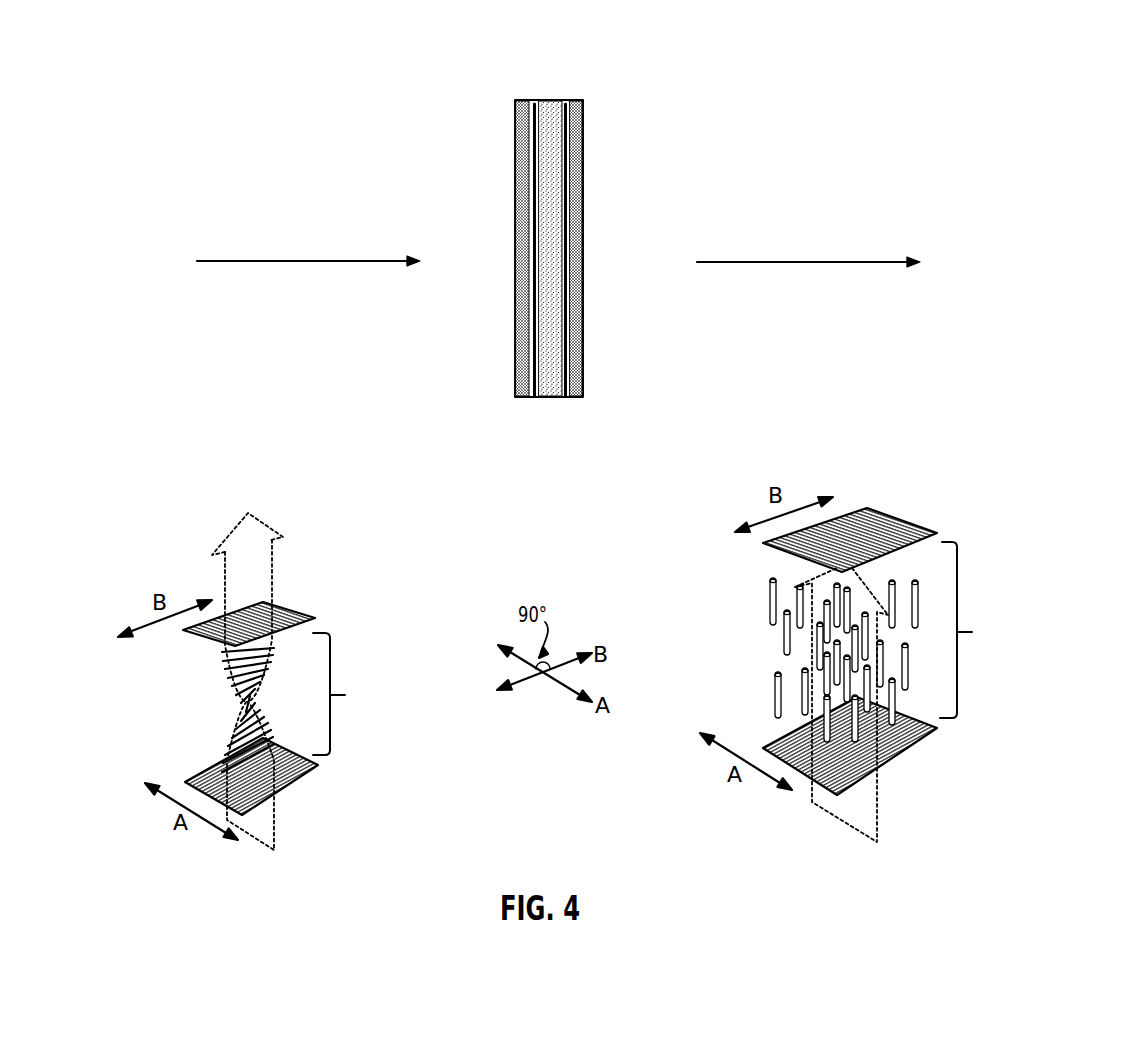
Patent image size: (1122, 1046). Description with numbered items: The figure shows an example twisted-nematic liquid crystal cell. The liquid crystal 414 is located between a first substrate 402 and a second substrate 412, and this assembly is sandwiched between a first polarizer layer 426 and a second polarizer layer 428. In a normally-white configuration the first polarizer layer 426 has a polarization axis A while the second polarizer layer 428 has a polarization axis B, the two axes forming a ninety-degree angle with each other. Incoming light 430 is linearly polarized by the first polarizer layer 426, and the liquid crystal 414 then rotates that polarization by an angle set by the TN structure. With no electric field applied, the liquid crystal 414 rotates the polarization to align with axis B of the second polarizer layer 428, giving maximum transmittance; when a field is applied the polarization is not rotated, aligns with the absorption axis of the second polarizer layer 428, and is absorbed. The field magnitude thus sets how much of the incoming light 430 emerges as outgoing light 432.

The first substrate 402 is at (533, 100).
The second substrate 412 is at (566, 100).
The liquid crystal 414 is at (543, 100).
The first polarizer layer 426 is at (523, 100).
The second polarizer layer 428 is at (576, 100).
The incoming light 430 is at (300, 260).
The outgoing light 432 is at (803, 261).